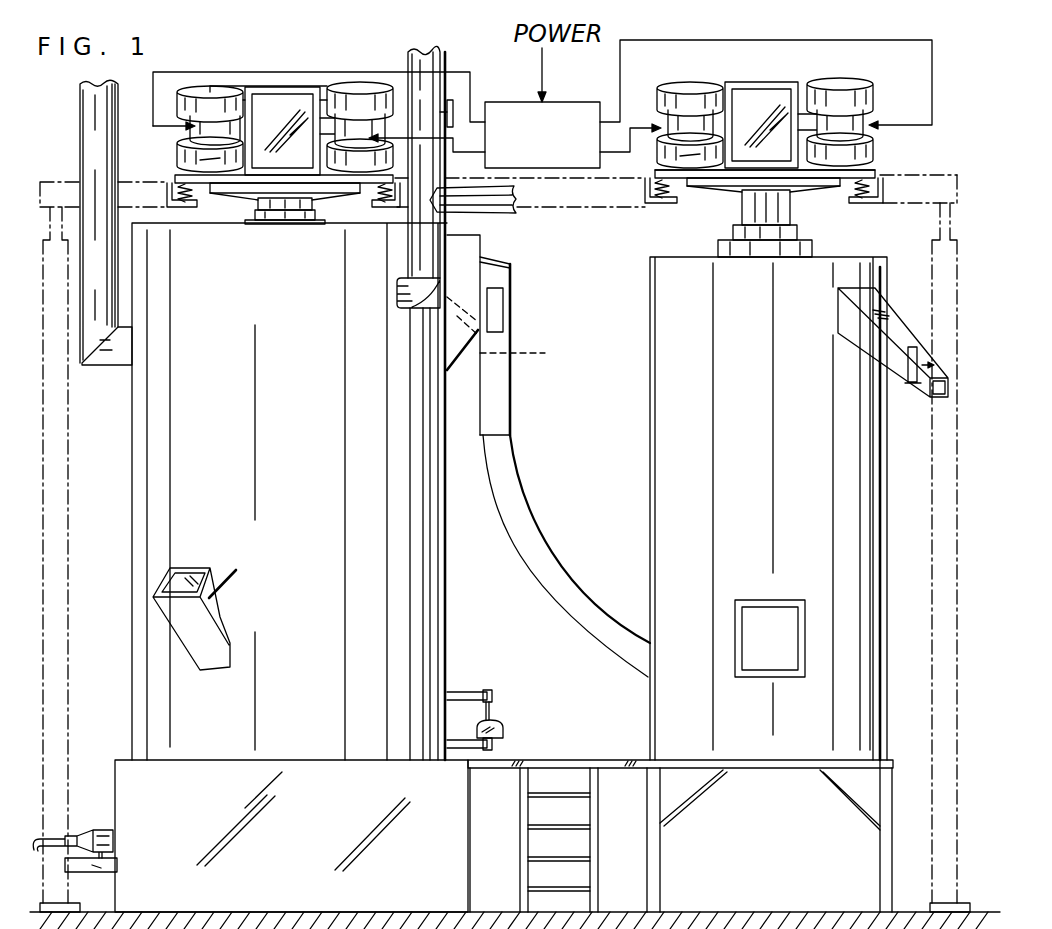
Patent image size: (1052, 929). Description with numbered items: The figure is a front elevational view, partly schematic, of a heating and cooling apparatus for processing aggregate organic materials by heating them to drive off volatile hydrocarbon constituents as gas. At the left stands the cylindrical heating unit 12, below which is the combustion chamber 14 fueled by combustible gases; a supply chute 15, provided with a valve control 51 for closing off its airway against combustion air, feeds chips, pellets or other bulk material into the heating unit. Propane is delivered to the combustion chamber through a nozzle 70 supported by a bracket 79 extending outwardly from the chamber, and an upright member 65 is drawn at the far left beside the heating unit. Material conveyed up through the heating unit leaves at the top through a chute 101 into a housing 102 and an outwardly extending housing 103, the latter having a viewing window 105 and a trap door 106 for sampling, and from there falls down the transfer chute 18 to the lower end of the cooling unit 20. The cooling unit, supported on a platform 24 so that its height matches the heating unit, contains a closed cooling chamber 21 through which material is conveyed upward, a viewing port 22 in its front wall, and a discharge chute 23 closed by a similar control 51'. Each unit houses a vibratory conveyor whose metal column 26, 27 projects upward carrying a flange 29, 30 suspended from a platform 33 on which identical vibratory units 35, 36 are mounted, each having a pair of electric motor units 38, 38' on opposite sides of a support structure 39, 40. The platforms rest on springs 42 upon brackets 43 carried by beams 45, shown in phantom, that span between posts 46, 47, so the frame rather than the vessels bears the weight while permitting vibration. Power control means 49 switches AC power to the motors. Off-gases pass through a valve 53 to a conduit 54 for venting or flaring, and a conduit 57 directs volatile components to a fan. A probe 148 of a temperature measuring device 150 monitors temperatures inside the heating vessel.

The heating unit 12 is at (127, 657).
The combustion chamber 14 is at (473, 827).
The supply chute 15 is at (158, 605).
The transfer chute 18 is at (515, 532).
The cooling unit 20 is at (898, 665).
The cooling chamber 21 is at (650, 437).
The viewing port 22 is at (753, 617).
The discharge chute 23 is at (900, 322).
The platform 24 is at (873, 847).
The metal column 26 is at (320, 193).
The metal column 27 is at (740, 204).
The flange 29 is at (240, 197).
The flange 30 is at (813, 195).
The platform 33 is at (872, 170).
The vibratory unit 35 is at (318, 73).
The vibratory unit 36 is at (796, 58).
The electric motor unit 38 is at (450, 105).
The electric motor unit 38' is at (614, 94).
The support structure 39 is at (290, 86).
The support structure 40 is at (738, 82).
The spring 42 is at (173, 193).
The bracket 43 is at (180, 214).
The beam 45 is at (577, 209).
The post 46 is at (68, 460).
The post 47 is at (933, 508).
The power control means 49 is at (560, 102).
The valve control 51 is at (254, 590).
The valve control 51' is at (869, 382).
The valve 53 is at (455, 100).
The conduit 54 is at (440, 52).
The conduit 57 is at (497, 213).
The rail 65 is at (80, 123).
The nozzle 70 is at (105, 832).
The bracket 79 is at (97, 876).
The chute 101 is at (516, 334).
The housing 102 is at (467, 360).
The housing 103 is at (512, 387).
The viewing window 105 is at (507, 312).
The trap door 106 is at (507, 258).
The probe 148 is at (463, 693).
The temperature measuring device 150 is at (503, 728).